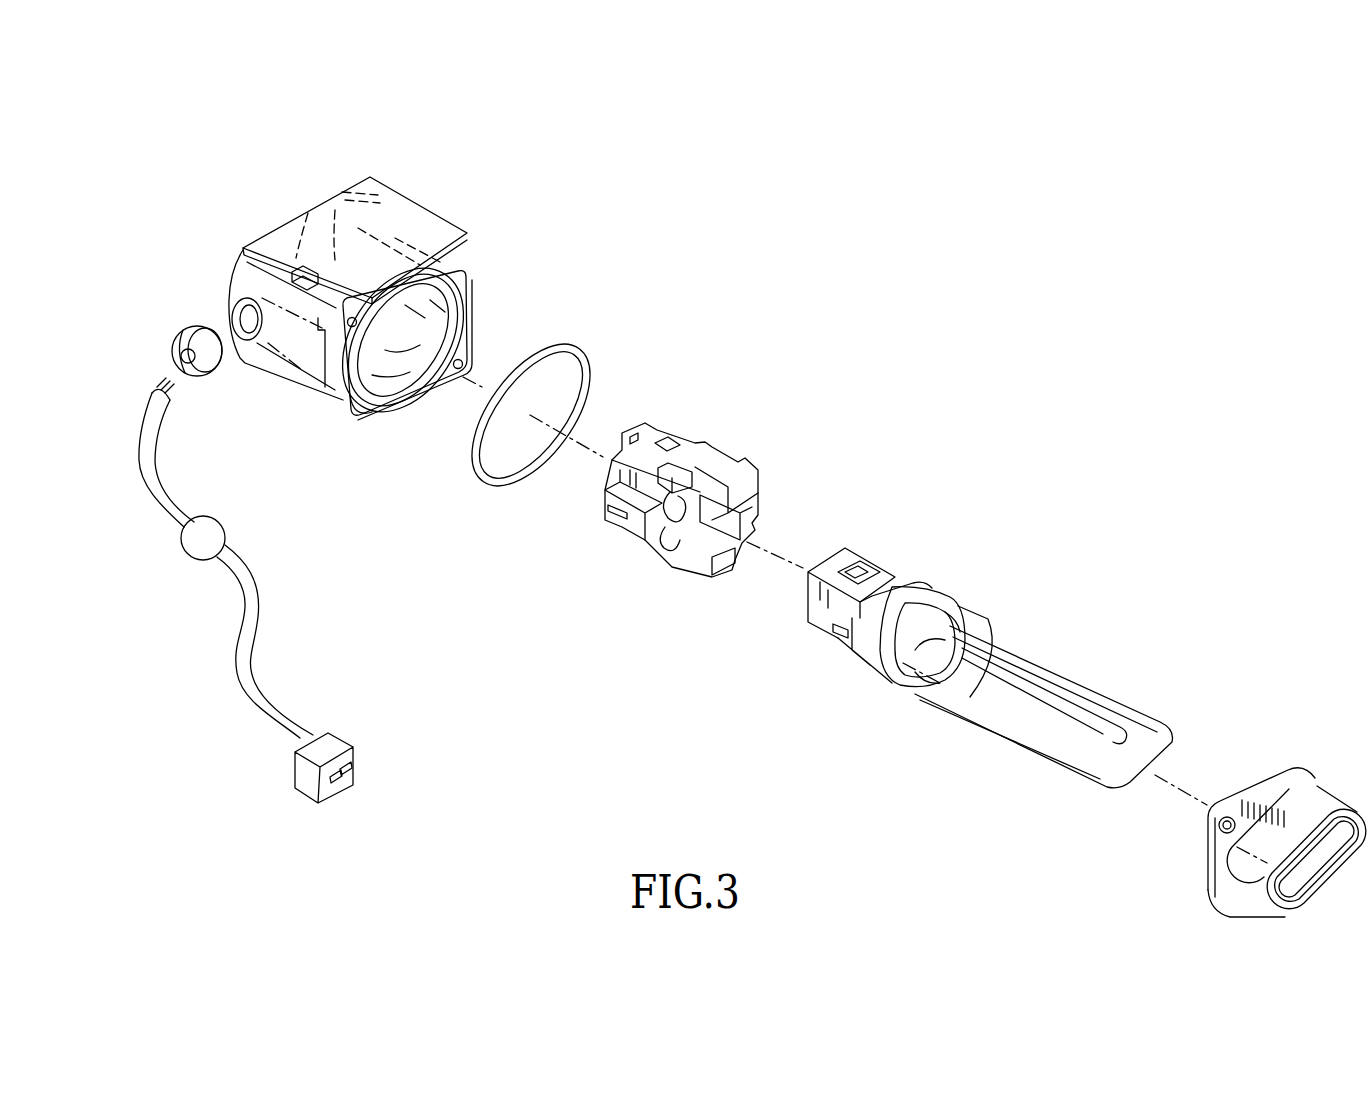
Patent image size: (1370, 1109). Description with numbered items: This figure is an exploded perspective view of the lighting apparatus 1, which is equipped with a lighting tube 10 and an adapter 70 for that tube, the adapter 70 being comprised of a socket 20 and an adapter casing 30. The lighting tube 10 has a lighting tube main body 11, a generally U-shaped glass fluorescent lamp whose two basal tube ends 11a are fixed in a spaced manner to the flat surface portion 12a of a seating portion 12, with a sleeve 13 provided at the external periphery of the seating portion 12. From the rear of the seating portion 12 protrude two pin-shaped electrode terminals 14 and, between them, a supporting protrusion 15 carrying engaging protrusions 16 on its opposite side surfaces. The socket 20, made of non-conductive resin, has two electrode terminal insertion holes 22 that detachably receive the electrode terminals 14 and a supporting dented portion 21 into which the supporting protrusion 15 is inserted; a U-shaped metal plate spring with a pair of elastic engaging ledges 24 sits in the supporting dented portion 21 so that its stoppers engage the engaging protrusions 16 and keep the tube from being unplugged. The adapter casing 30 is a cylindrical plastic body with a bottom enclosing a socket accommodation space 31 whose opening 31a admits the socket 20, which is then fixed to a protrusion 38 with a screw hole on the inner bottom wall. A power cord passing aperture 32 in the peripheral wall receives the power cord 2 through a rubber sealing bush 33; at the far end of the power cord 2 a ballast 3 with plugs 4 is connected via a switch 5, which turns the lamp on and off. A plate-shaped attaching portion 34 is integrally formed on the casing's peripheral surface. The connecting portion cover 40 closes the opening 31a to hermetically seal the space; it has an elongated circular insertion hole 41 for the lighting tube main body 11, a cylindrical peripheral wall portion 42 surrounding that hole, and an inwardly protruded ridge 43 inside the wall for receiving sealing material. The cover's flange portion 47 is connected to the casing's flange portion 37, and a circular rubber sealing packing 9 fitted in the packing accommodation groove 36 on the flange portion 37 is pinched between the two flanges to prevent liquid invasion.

The lighting apparatus 1 is at (905, 347).
The power cord 2 is at (152, 462).
The ballast 3 is at (337, 742).
The plugs 4 is at (345, 779).
The switch 5 is at (222, 518).
The sealing packing 9 is at (487, 478).
The lighting tube 10 is at (1090, 686).
The lighting tube main body 11 is at (1033, 730).
The tube ends 11a is at (953, 617).
The seating portion 12 is at (898, 590).
The flat surface portion 12a is at (953, 660).
The sleeve 13 is at (943, 600).
The electrode terminals 14 is at (830, 636).
The supporting protrusion 15 is at (803, 603).
The engaging protrusions 16 is at (860, 570).
The socket 20 is at (713, 453).
The supporting dented portion 21 is at (717, 517).
The electrode terminal insertion holes 22 is at (743, 508).
The elastic engaging ledges 24 is at (720, 568).
The adapter casing 30 is at (470, 280).
The socket accommodation space 31 is at (450, 337).
The opening 31a is at (402, 382).
The power cord passing aperture 32 is at (228, 330).
The rubber sealing bush 33 is at (173, 333).
The attaching portion 34 is at (430, 222).
The packing accommodation groove 36 is at (380, 417).
The flange portion 37 is at (333, 357).
The protrusion 38 is at (298, 272).
The connecting portion cover 40 is at (1293, 768).
The insertion hole 41 is at (1357, 833).
The peripheral wall portion 42 is at (1292, 817).
The protruded ridge 43 is at (1233, 877).
The flange portion 47 is at (1223, 855).
The adapter 70 is at (568, 213).